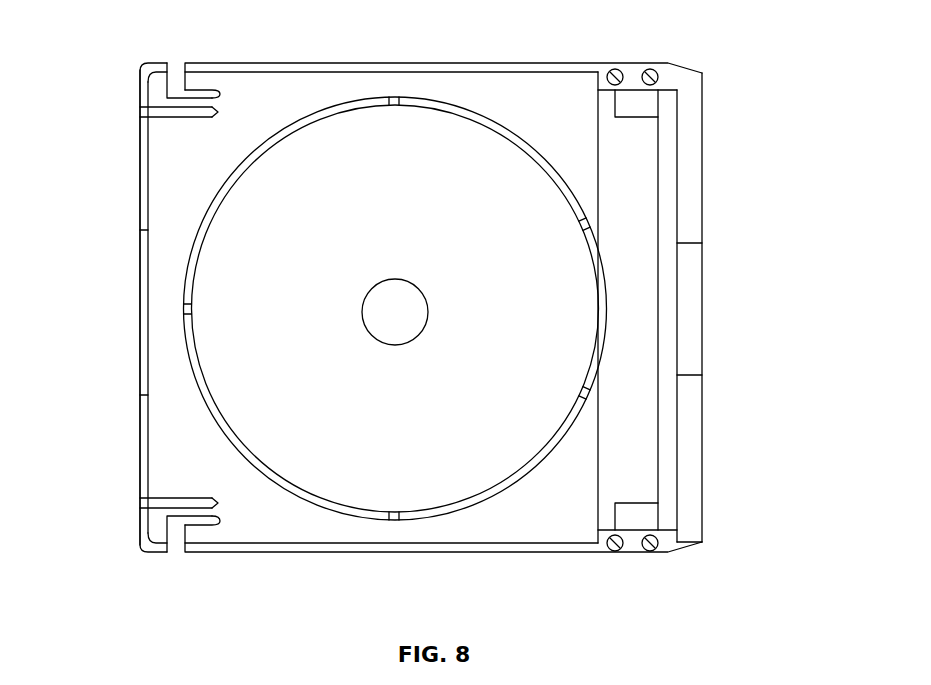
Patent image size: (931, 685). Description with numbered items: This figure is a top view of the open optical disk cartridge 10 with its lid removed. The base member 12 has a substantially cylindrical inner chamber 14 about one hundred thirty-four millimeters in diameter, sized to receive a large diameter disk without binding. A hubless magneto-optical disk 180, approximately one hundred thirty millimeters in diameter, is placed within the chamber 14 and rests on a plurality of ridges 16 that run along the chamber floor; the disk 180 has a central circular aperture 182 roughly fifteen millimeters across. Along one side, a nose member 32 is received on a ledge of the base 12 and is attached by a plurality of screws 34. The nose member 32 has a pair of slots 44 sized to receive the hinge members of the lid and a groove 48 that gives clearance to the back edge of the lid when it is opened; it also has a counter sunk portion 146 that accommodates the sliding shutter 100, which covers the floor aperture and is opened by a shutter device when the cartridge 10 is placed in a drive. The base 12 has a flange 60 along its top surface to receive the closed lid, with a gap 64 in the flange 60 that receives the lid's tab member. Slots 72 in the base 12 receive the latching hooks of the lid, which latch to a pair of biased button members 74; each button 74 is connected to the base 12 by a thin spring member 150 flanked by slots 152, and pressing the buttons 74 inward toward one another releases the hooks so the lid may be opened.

The optical disk cartridge 10 is at (287, 600).
The base member 12 is at (140, 446).
The inner chamber 14 is at (236, 180).
The ridges 16 is at (393, 106).
The nose member 32 is at (615, 166).
The screws 34 is at (650, 69).
The slots 44 is at (647, 103).
The groove 48 is at (665, 170).
The flange 60 is at (500, 63).
The gap 64 is at (140, 302).
The slots 72 is at (171, 96).
The button members 74 is at (140, 82).
The shutter 100 is at (693, 306).
The counter sunk portion 146 is at (703, 447).
The spring member 150 is at (182, 117).
The slots 152 is at (219, 109).
The hubless optical disk 180 is at (268, 327).
The central circular aperture 182 is at (421, 288).